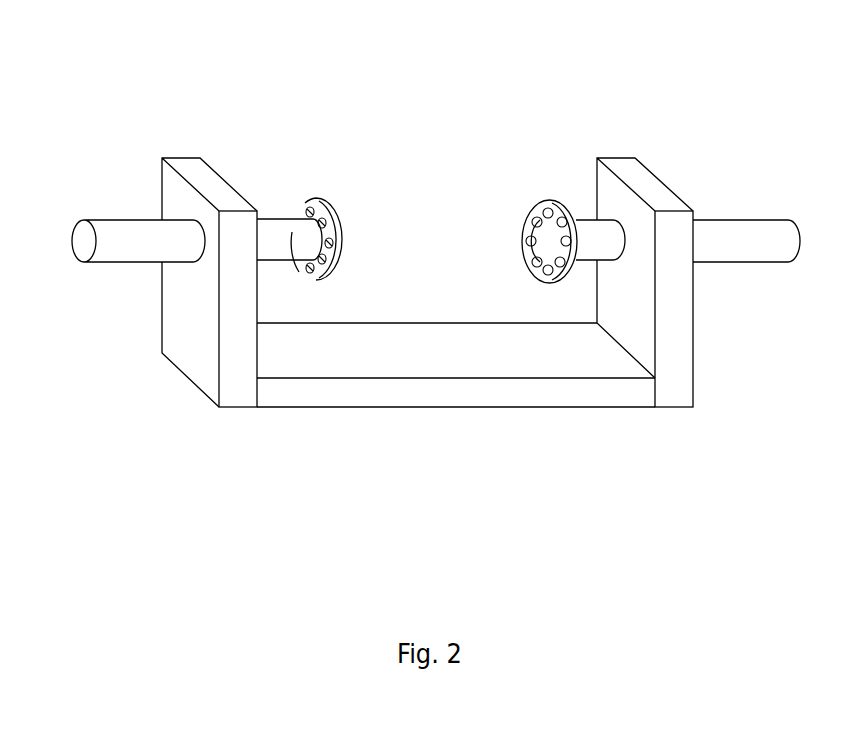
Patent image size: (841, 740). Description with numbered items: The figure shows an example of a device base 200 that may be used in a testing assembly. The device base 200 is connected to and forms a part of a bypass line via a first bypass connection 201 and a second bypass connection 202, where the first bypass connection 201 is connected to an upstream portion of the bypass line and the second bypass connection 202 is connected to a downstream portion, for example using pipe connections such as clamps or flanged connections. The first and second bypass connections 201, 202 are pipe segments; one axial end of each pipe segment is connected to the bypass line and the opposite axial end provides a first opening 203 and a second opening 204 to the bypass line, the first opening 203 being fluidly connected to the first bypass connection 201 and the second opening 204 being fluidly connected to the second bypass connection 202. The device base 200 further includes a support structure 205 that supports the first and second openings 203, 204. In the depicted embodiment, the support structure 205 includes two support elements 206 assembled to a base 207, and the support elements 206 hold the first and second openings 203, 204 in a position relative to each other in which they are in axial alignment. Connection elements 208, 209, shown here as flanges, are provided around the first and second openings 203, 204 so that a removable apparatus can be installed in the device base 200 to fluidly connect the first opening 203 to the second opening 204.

The device base 200 is at (436, 245).
The first bypass connection 201 is at (113, 232).
The second bypass connection 202 is at (745, 240).
The first opening 203 is at (347, 240).
The second opening 204 is at (555, 240).
The support structure 205 is at (190, 405).
The support elements 206 is at (177, 313).
The base 207 is at (683, 327).
The connection element 208 is at (312, 200).
The connection element 209 is at (547, 200).